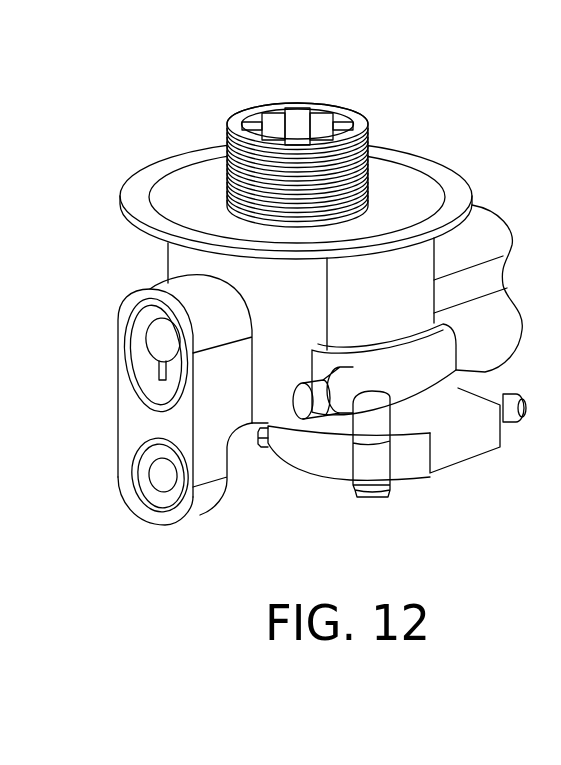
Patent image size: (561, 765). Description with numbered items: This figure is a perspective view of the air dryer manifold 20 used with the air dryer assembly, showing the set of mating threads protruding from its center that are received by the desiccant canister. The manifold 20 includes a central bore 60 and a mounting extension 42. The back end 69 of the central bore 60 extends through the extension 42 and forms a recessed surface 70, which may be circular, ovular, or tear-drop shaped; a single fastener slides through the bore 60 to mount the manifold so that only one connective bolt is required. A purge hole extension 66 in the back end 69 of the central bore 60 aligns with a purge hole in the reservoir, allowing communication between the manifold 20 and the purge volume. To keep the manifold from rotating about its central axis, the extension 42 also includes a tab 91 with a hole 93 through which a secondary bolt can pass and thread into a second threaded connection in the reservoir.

The air dryer manifold 20 is at (405, 135).
The mounting extension 42 is at (165, 290).
The recessed surface 70 is at (140, 322).
The back end 69 is at (145, 340).
The central bore 60 is at (163, 342).
The purge hole extension 66 is at (158, 376).
The tab 91 is at (207, 505).
The hole 93 is at (156, 482).